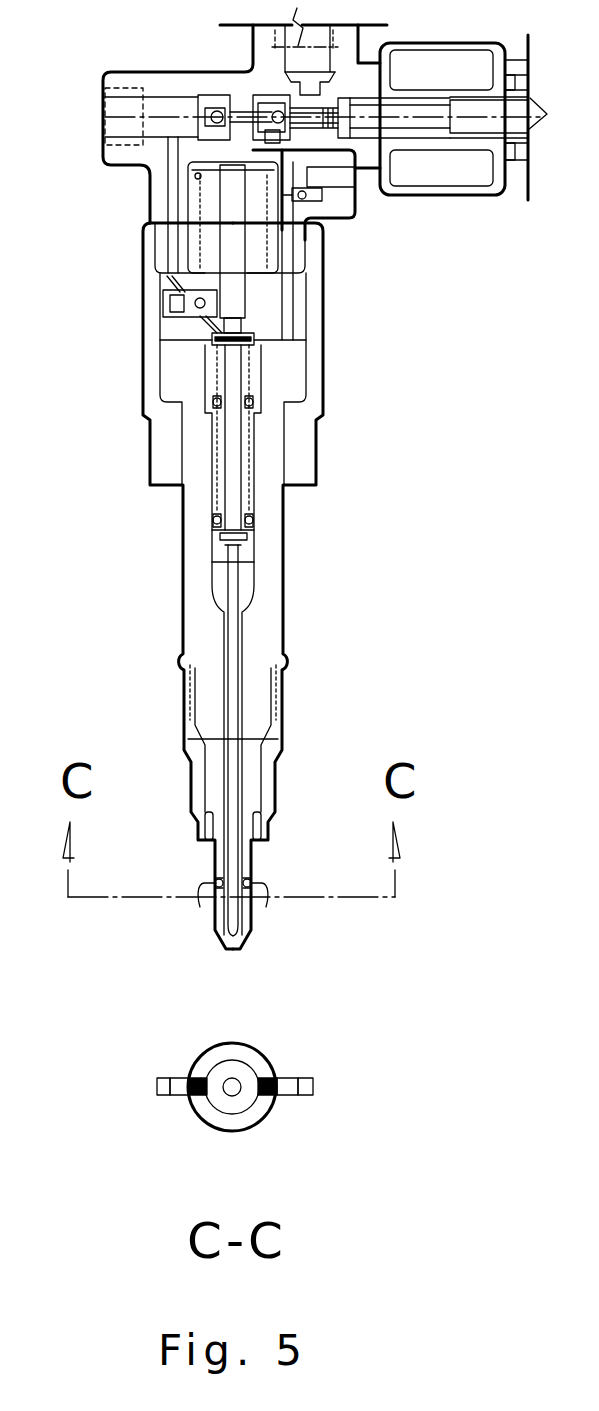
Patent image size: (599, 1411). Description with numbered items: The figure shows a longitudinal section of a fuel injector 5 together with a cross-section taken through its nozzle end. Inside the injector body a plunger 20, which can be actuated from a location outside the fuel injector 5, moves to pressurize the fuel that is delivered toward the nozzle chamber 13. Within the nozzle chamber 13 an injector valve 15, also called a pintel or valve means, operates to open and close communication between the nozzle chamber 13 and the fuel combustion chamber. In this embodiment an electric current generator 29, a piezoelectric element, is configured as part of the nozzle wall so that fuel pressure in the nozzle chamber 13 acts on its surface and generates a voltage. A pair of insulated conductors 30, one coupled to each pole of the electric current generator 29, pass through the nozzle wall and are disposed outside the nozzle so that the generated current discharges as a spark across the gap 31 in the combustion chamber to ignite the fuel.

The fuel injector 5 is at (329, 355).
The nozzle chamber 13 is at (247, 548).
The injector valve 15 is at (232, 683).
The plunger 20 is at (240, 232).
The electric current generator 29 is at (248, 605).
The conductors 30 is at (160, 1080).
The gap 31 is at (290, 1080).